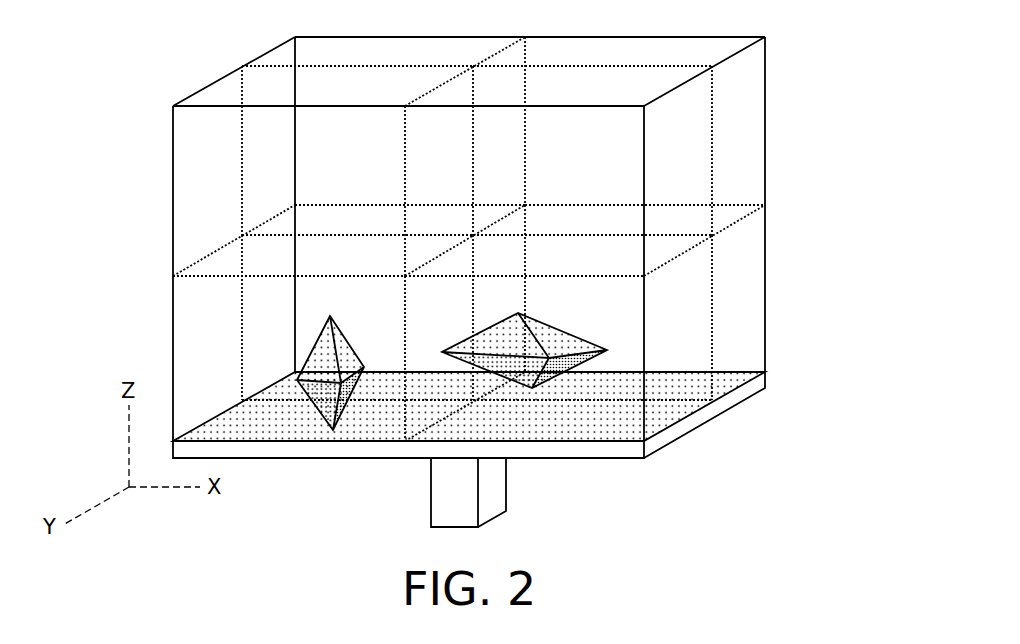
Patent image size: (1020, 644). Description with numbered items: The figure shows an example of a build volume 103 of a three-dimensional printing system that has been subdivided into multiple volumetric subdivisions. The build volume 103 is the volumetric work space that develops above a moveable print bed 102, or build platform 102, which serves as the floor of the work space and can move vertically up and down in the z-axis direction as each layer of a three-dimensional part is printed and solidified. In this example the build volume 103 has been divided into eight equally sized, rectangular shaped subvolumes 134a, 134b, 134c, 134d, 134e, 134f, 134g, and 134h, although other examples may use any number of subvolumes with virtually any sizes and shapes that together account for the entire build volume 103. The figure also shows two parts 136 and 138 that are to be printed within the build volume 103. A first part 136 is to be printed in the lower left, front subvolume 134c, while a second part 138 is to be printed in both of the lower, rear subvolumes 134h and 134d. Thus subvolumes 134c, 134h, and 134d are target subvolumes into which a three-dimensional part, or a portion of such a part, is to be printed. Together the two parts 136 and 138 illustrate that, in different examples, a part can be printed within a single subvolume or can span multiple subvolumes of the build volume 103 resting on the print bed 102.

The print bed 102 is at (670, 443).
The build volume 103 is at (108, 29).
The subvolume 134a is at (212, 97).
The subvolume 134b is at (272, 60).
The subvolume 134c is at (220, 263).
The subvolume 134d is at (285, 228).
The subvolume 134e is at (688, 152).
The subvolume 134f is at (745, 76).
The subvolume 134g is at (686, 330).
The subvolume 134h is at (743, 255).
The first part 136 is at (315, 404).
The second part 138 is at (543, 330).